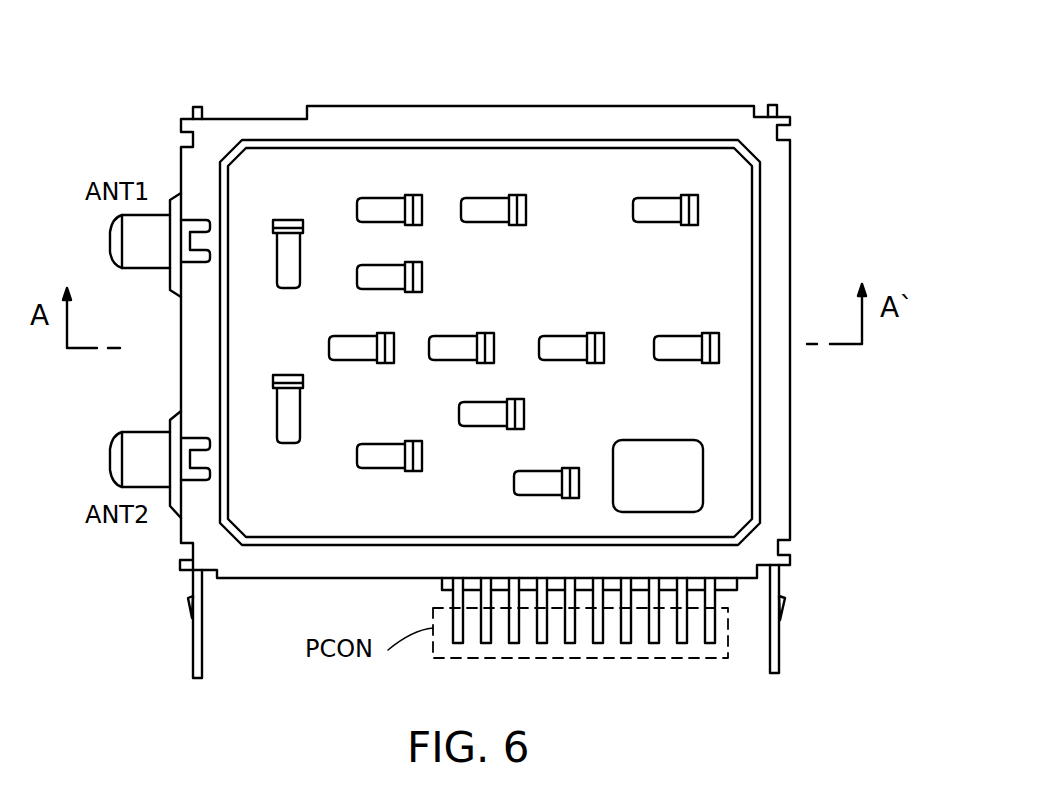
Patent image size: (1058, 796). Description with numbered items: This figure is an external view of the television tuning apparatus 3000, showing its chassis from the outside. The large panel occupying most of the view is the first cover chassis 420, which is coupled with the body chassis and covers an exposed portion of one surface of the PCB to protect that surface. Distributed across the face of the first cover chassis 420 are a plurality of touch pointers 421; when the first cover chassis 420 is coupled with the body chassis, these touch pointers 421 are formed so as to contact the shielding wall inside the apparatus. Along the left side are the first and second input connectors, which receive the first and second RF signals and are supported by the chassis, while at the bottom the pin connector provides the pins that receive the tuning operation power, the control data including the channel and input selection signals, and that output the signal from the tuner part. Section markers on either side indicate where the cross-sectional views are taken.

The television tuning apparatus 3000 is at (619, 90).
The first cover chassis 420 is at (735, 242).
The touch pointers 421 is at (385, 458).